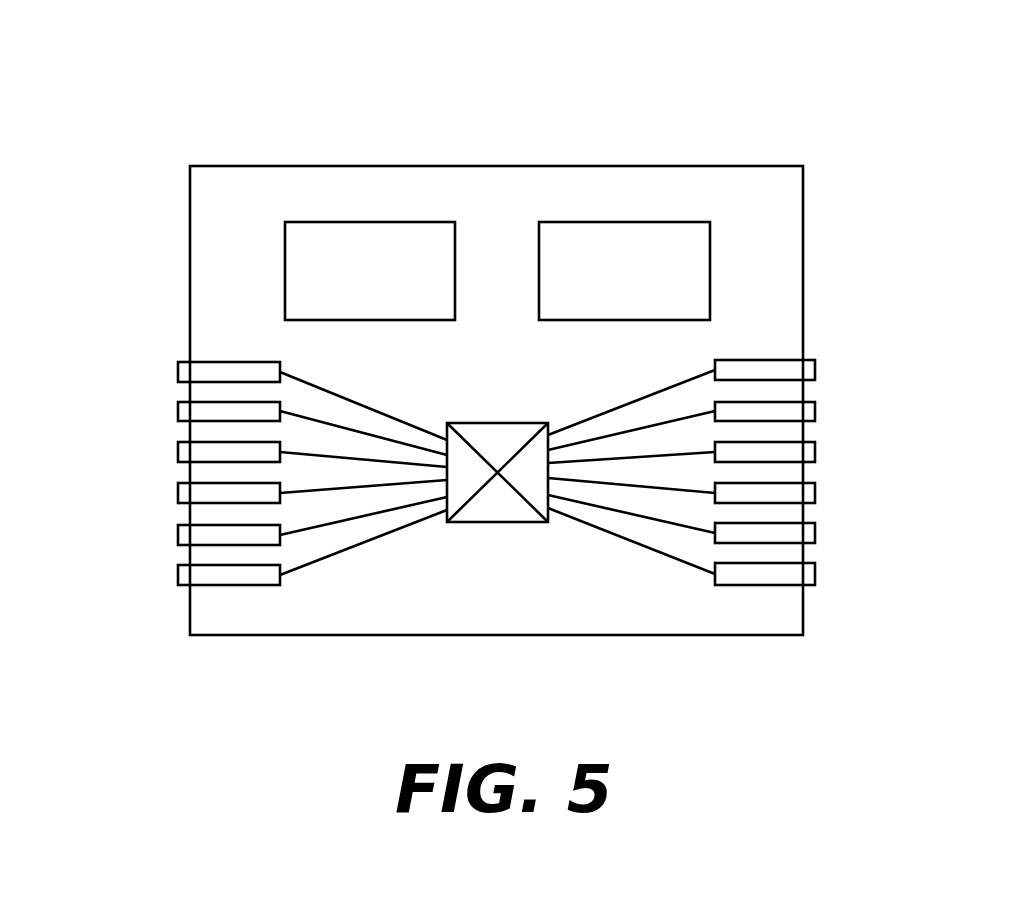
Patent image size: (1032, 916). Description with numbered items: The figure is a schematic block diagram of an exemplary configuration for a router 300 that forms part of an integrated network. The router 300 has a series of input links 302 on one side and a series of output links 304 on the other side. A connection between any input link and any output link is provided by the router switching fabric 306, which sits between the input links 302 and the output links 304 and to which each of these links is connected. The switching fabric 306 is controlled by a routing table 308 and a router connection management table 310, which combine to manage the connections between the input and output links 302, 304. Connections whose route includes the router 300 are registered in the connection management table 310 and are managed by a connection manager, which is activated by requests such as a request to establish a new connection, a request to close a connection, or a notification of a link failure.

The router 300 is at (243, 108).
The input links 302 is at (177, 352).
The output links 304 is at (817, 352).
The router switching fabric 306 is at (485, 522).
The routing table 308 is at (343, 222).
The router connection management table 310 is at (585, 222).